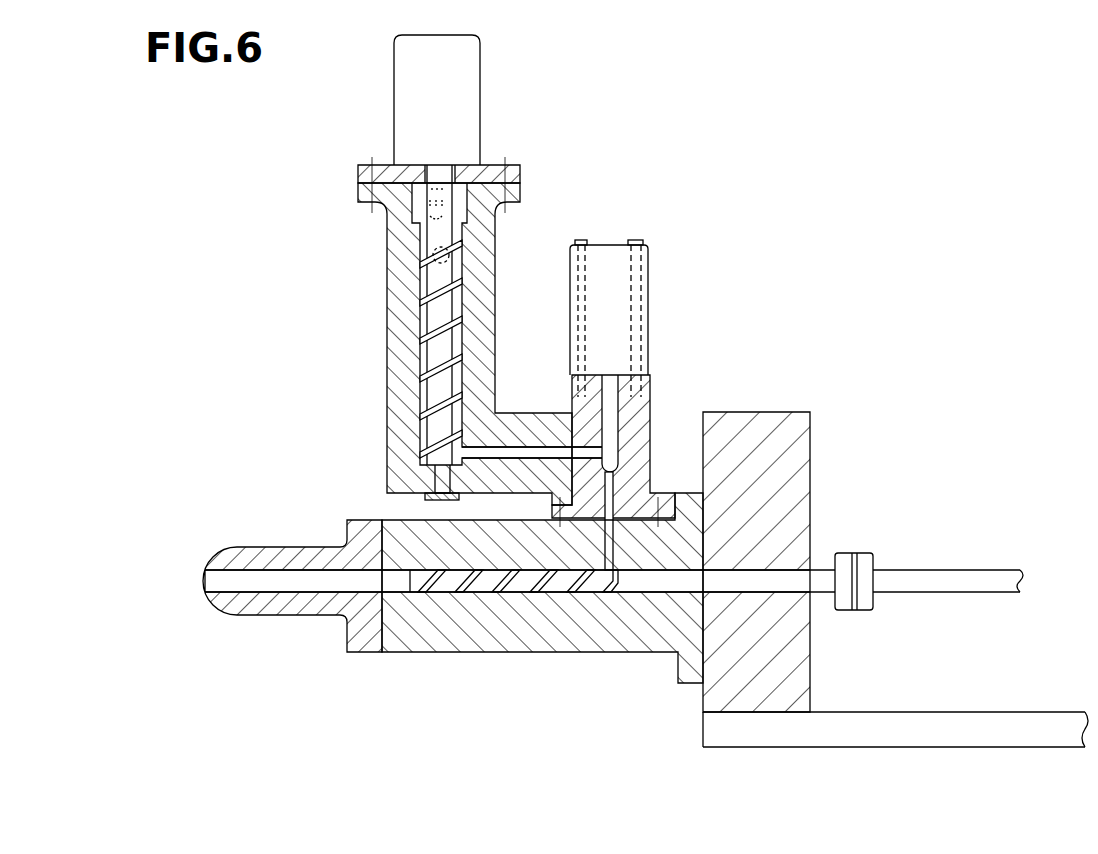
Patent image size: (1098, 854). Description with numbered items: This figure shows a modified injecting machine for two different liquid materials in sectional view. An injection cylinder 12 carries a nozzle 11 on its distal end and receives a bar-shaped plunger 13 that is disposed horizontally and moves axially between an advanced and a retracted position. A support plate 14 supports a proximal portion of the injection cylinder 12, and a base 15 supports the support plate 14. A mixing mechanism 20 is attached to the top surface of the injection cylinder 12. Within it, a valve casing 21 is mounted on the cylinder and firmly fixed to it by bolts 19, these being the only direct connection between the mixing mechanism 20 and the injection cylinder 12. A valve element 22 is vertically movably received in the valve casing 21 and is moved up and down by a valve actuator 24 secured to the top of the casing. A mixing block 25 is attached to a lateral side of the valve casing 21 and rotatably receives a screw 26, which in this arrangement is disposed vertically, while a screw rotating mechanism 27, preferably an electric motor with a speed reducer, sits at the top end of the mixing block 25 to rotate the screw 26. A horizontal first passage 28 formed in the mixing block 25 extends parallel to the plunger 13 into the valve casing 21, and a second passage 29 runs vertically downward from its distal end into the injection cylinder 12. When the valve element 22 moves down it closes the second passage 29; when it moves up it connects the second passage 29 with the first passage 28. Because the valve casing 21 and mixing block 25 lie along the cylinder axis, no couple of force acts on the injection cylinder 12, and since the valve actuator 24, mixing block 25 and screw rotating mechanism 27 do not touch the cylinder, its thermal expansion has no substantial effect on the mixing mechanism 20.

The nozzle 11 is at (298, 607).
The injection cylinder 12 is at (478, 648).
The plunger 13 is at (548, 592).
The support plate 14 is at (812, 437).
The base 15 is at (898, 733).
The bolts 19 is at (557, 497).
The mixing mechanism 20 is at (588, 176).
The valve casing 21 is at (655, 402).
The valve element 22 is at (613, 432).
The valve actuator 24 is at (650, 303).
The mixing block 25 is at (400, 400).
The screw 26 is at (432, 318).
The screw rotating mechanism 27 is at (410, 103).
The first passage 28 is at (540, 445).
The second passage 29 is at (606, 590).